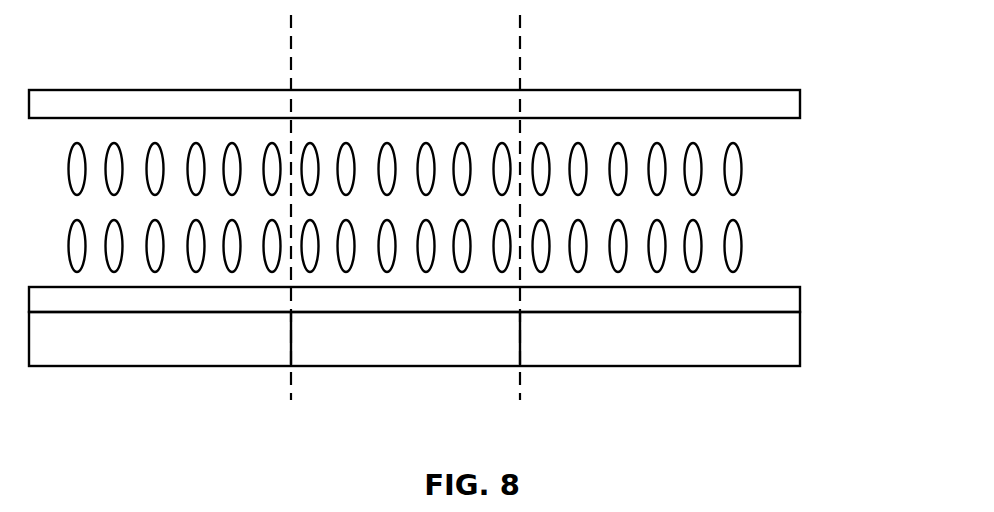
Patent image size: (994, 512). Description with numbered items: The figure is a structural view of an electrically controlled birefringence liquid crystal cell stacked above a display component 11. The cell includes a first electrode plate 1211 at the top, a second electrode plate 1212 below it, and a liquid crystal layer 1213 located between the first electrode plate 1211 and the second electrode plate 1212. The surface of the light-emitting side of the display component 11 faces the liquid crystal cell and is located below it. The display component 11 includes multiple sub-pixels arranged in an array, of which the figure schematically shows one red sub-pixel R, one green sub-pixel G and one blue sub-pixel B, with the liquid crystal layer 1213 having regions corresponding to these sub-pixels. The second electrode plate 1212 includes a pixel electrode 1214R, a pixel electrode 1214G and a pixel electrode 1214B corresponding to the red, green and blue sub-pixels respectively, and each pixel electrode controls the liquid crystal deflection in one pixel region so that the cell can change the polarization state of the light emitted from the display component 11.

The first electrode plate 1211 is at (800, 101).
The second electrode plate 1212 is at (800, 297).
The liquid crystal layer 1213 is at (796, 204).
The display component 11 is at (800, 340).
The pixel electrode 1214R is at (82, 302).
The pixel electrode 1214G is at (363, 302).
The pixel electrode 1214B is at (596, 302).